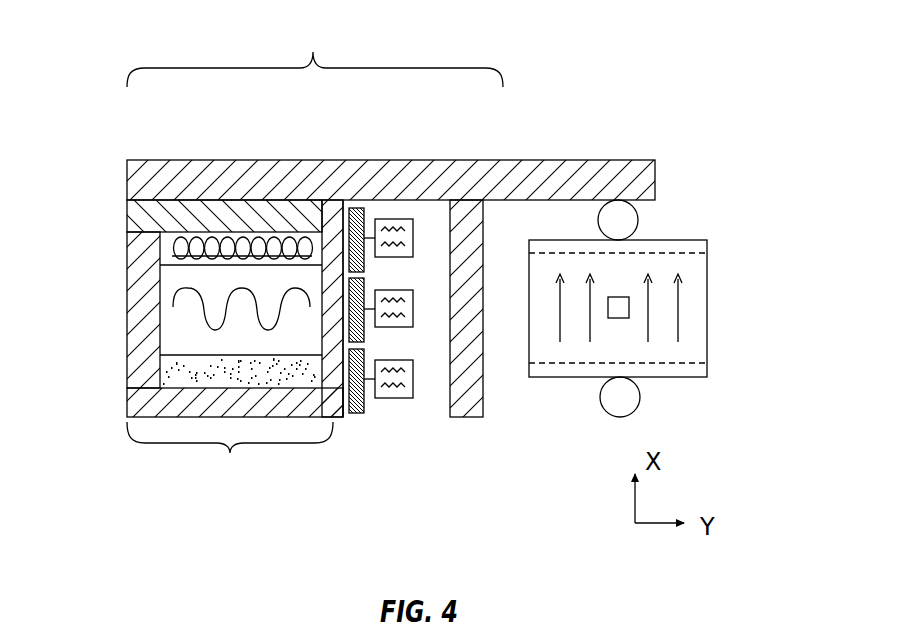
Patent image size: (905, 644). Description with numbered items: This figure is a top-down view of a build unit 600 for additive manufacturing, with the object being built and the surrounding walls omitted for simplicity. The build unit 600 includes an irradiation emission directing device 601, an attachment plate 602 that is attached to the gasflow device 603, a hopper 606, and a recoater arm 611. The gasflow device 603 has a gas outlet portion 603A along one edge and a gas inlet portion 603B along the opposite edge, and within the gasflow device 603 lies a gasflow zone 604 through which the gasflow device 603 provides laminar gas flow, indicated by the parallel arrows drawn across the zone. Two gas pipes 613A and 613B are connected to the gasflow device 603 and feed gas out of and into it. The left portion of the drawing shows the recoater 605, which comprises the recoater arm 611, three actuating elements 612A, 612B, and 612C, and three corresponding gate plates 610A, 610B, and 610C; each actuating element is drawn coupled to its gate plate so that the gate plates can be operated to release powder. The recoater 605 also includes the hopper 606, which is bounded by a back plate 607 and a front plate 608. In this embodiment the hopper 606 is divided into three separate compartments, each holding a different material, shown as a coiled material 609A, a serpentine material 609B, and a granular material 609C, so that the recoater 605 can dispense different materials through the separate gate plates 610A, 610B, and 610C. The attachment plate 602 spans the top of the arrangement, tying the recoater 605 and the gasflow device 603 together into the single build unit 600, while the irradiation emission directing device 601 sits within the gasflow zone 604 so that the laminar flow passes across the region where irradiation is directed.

The build unit 600 is at (704, 153).
The irradiation emission directing device 601 is at (618, 297).
The attachment plate 602 is at (320, 160).
The gasflow device 603 is at (707, 327).
The gas outlet portion 603A is at (697, 369).
The gas inlet portion 603B is at (707, 246).
The gasflow zone 604 is at (578, 335).
The recoater 605 is at (315, 52).
The hopper 606 is at (230, 455).
The back plate 607 is at (128, 291).
The front plate 608 is at (333, 420).
The material 609A is at (166, 255).
The material 609B is at (170, 303).
The material 609C is at (160, 382).
The gate plate 610A is at (355, 413).
The gate plate 610B is at (366, 284).
The gate plate 610C is at (355, 208).
The recoater arm 611 is at (483, 415).
The actuating element 612A is at (393, 398).
The actuating element 612B is at (395, 327).
The actuating element 612C is at (391, 219).
The gas pipe 613A is at (638, 222).
The gas pipe 613B is at (640, 397).